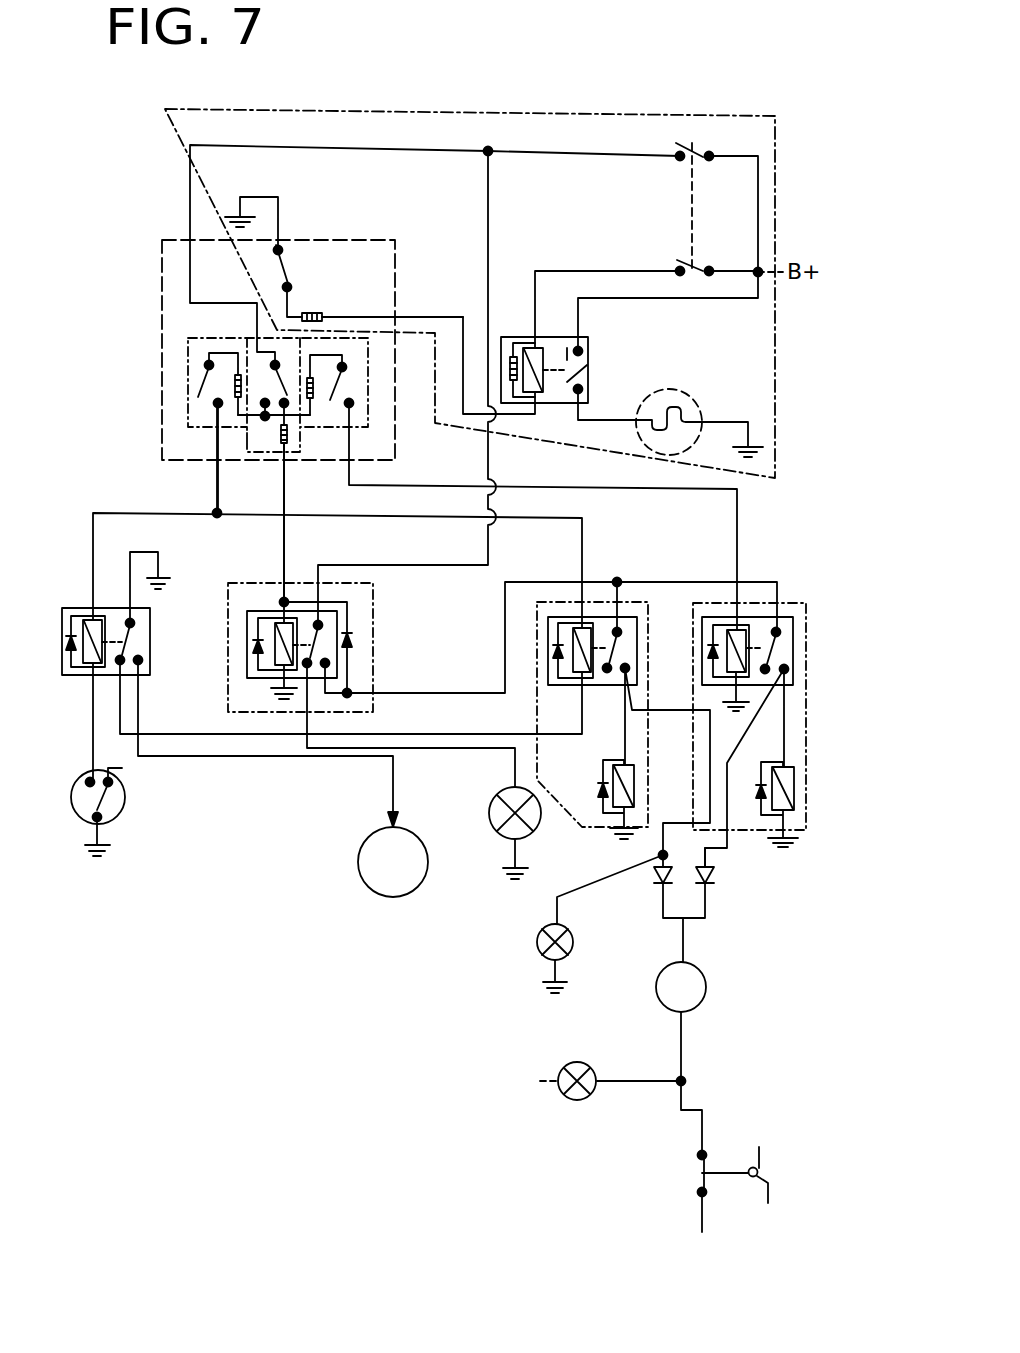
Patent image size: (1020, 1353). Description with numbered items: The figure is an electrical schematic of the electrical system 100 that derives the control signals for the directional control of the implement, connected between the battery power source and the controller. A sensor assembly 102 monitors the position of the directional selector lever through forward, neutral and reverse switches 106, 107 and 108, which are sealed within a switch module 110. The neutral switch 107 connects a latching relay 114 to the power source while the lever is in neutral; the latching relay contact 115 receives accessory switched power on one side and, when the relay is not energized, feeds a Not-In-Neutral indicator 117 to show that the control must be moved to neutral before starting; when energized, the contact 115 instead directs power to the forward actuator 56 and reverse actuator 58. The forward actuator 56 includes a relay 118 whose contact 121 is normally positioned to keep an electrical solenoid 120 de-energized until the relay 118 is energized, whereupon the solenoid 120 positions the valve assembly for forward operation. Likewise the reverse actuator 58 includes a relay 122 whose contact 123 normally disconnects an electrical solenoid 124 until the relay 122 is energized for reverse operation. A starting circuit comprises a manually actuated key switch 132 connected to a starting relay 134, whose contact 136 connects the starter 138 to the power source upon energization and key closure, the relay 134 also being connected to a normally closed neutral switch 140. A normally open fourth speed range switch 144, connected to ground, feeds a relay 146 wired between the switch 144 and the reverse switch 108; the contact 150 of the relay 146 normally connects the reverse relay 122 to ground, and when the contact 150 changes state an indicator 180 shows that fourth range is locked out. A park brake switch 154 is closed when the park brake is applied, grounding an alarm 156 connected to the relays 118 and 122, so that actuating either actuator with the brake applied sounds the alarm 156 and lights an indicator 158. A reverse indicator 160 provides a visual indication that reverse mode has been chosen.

The electrical system 100 is at (216, 905).
The sensor assembly 102 is at (165, 357).
The forward switch 106 is at (360, 412).
The neutral switch 107 is at (263, 437).
The reverse switch 108 is at (203, 406).
The switch module 110 is at (177, 266).
The latching relay 114 is at (339, 640).
The latching relay contact 115 is at (318, 645).
The Not-In-Neutral indicator 117 is at (513, 827).
The forward relay 118 is at (782, 623).
The electrical solenoid 120 is at (786, 812).
The contact 121 is at (795, 653).
The reverse relay 122 is at (616, 605).
The contact 123 is at (670, 648).
The electrical solenoid 124 is at (631, 758).
The key switch 132 is at (678, 235).
The starting relay 134 is at (582, 352).
The contact 136 is at (570, 380).
The starter 138 is at (670, 400).
The neutral switch 140 is at (292, 263).
The fourth speed range switch 144 is at (73, 818).
The relay 146 is at (117, 605).
The contact 150 is at (122, 648).
The park brake switch 154 is at (690, 1181).
The alarm 156 is at (703, 1010).
The indicator 158 is at (627, 1015).
The reverse indicator 160 is at (532, 945).
The indicator 180 is at (393, 873).
The forward actuator 56 is at (808, 598).
The reverse actuator 58 is at (536, 640).